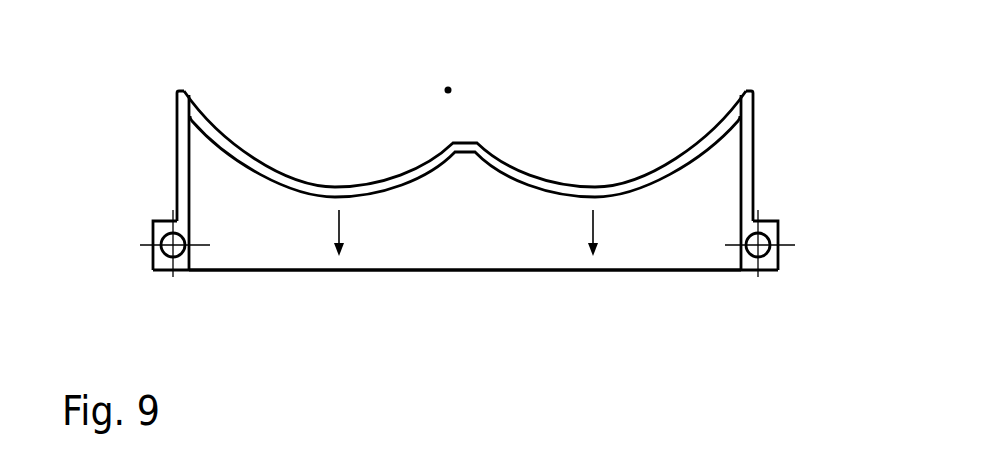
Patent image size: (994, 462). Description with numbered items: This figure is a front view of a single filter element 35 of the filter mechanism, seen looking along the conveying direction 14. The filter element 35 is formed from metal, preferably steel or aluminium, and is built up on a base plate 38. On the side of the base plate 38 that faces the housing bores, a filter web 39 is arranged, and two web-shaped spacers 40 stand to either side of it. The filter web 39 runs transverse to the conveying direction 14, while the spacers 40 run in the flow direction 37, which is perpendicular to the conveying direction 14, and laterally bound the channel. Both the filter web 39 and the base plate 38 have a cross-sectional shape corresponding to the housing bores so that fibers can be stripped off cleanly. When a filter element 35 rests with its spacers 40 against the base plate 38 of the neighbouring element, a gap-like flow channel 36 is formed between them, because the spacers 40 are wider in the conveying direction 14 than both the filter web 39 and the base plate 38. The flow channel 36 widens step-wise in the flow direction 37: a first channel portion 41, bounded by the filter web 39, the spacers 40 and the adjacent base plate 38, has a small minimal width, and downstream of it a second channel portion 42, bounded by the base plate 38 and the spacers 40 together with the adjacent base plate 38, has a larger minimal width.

The conveying direction 14 is at (448, 88).
The filter element 35 is at (467, 191).
The flow channel 36 is at (464, 246).
The flow direction 37 is at (339, 228).
The base plate 38 is at (663, 248).
The filter web 39 is at (638, 180).
The spacer 40 is at (182, 173).
The first channel portion 41 is at (313, 180).
The second channel portion 42 is at (237, 260).